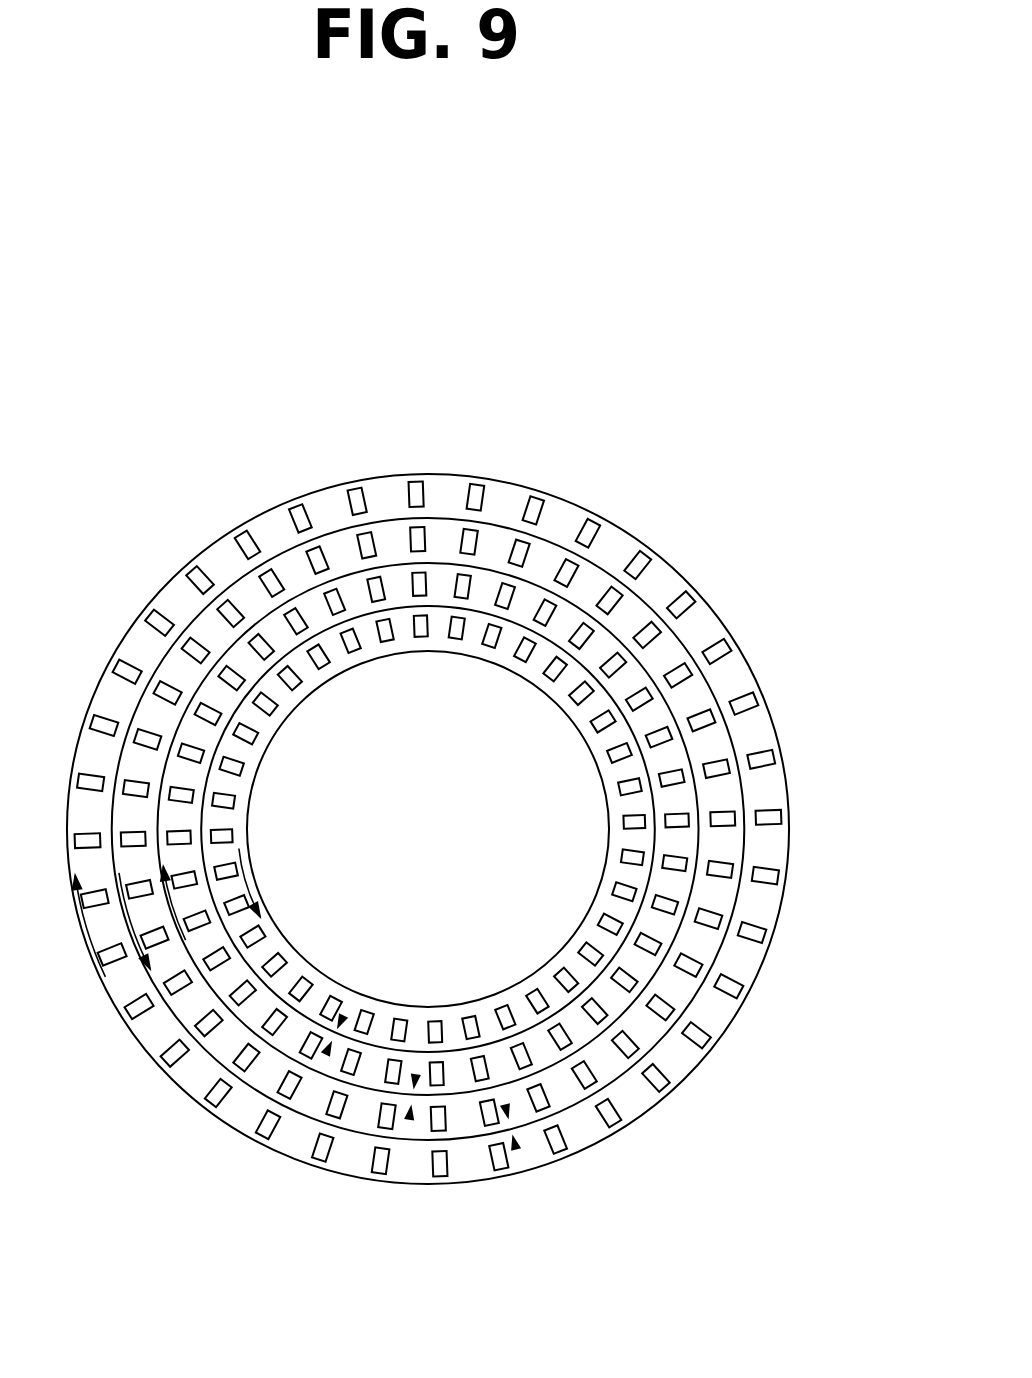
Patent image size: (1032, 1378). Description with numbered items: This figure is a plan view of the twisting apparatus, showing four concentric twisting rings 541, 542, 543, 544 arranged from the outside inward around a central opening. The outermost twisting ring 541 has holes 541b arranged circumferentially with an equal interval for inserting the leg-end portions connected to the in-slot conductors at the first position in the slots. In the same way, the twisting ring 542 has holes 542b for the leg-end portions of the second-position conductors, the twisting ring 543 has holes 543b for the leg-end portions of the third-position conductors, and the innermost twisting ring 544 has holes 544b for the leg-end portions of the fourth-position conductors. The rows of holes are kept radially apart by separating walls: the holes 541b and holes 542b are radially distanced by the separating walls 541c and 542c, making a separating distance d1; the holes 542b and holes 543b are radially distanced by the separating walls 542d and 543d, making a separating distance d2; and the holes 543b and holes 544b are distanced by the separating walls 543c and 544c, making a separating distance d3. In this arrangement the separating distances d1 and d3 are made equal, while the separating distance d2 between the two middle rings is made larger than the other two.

The twisting ring 541 is at (477, 796).
The twisting ring 542 is at (503, 739).
The twisting ring 543 is at (515, 757).
The twisting ring 544 is at (554, 810).
The holes 541b is at (538, 513).
The holes 542b is at (505, 540).
The holes 543b is at (452, 572).
The holes 544b is at (450, 605).
The separating wall 541c is at (729, 940).
The separating wall 542c is at (698, 992).
The separating wall 542d is at (652, 1022).
The separating wall 543c is at (601, 1022).
The separating wall 543d is at (624, 992).
The separating wall 544c is at (578, 992).
The separating distance d1 is at (503, 1097).
The separating distance d2 is at (418, 1062).
The separating distance d3 is at (347, 1008).